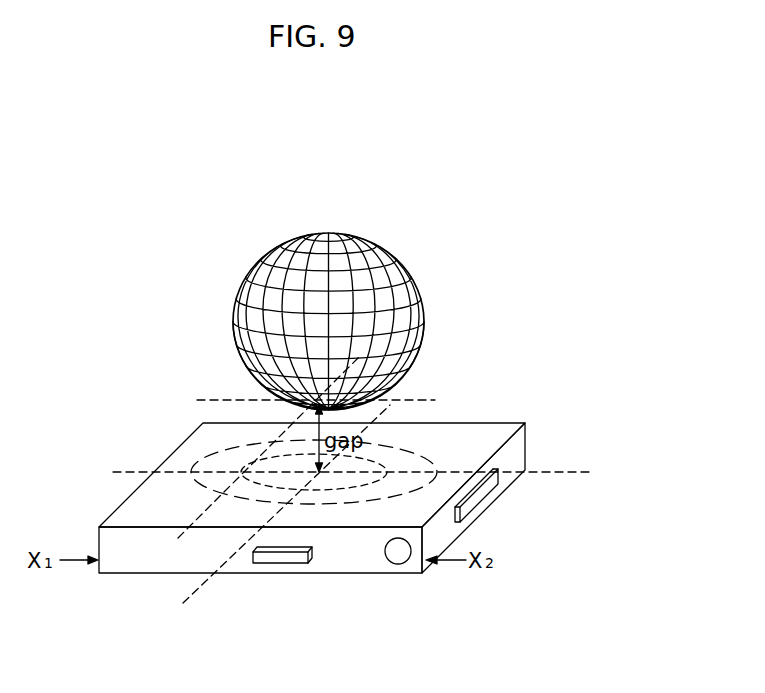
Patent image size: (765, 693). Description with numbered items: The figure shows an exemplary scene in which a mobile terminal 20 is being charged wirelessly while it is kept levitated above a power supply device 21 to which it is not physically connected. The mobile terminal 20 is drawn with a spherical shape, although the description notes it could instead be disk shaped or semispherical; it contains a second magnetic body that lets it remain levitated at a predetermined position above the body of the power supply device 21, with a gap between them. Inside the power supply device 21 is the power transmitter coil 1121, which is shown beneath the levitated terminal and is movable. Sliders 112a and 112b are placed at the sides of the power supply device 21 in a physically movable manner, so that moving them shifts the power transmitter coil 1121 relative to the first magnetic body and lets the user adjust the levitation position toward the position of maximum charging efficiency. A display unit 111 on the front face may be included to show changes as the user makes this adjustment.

The mobile terminal 20 is at (393, 257).
The power supply device 21 is at (500, 422).
The power transmitter coil 1121 is at (277, 457).
The slider 112a is at (293, 558).
The slider 112b is at (482, 492).
The display unit 111 is at (395, 564).